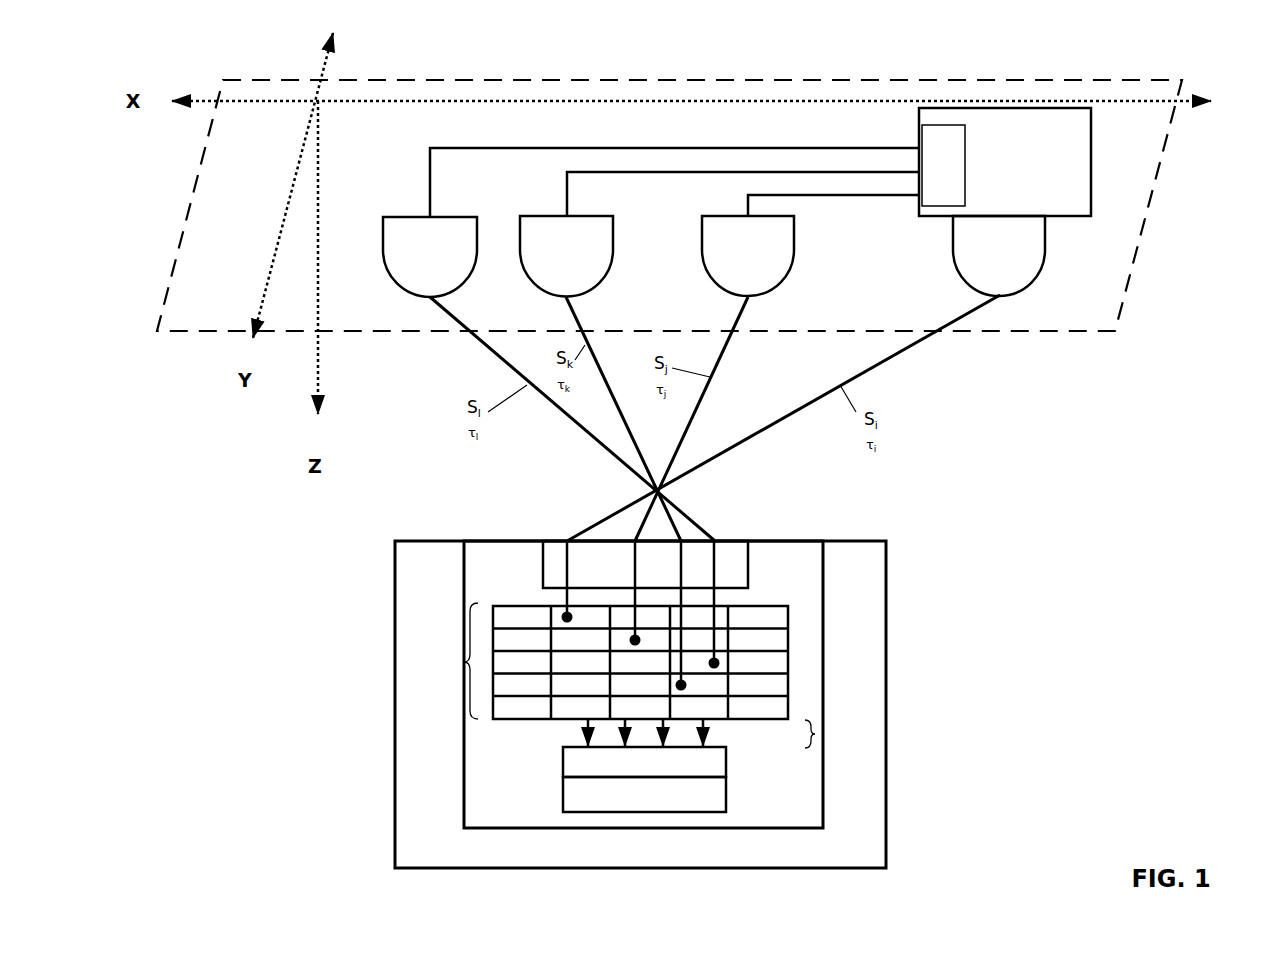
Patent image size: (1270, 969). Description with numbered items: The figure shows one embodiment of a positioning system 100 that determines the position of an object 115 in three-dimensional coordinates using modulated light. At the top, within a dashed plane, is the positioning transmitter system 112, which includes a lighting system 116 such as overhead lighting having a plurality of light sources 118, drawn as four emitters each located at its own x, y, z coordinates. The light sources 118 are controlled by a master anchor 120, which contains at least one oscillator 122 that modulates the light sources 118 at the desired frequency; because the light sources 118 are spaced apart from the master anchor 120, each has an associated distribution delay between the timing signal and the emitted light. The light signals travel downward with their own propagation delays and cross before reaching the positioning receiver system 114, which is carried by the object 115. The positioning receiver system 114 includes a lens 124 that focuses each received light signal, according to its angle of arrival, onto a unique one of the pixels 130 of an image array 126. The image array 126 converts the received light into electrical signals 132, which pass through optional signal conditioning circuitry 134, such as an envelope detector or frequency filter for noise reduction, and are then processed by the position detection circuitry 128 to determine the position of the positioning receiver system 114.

The positioning system 100 is at (201, 627).
The positioning transmitter system 112 is at (1034, 338).
The positioning receiver system 114 is at (807, 603).
The object 115 is at (395, 772).
The lighting system 116 is at (395, 160).
The light sources 118 is at (714, 256).
The master anchor 120 is at (1005, 162).
The oscillator 122 is at (943, 165).
The lens 124 is at (541, 566).
The image array 126 is at (807, 670).
The position detection circuitry 128 is at (644, 794).
The pixels 130 is at (464, 662).
The electrical signals 132 is at (814, 731).
The signal conditioning circuitry 134 is at (644, 762).